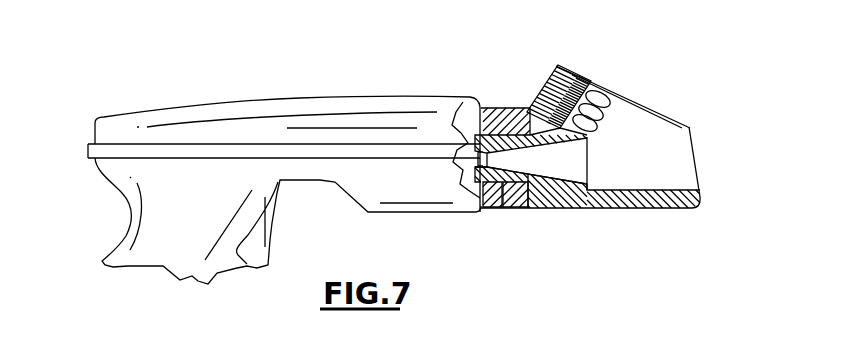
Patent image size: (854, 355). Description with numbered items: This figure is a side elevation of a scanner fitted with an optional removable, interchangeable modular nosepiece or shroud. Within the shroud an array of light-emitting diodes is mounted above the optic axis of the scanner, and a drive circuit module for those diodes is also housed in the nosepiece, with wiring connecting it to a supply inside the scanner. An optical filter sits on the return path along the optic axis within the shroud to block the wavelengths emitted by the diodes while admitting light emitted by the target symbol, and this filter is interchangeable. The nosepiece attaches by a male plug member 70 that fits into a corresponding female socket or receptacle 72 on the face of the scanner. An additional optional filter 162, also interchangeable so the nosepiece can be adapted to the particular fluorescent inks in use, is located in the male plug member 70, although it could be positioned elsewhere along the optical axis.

The additional filter 162 is at (462, 123).
The male plug member 70 is at (502, 193).
The female socket 72 is at (518, 207).